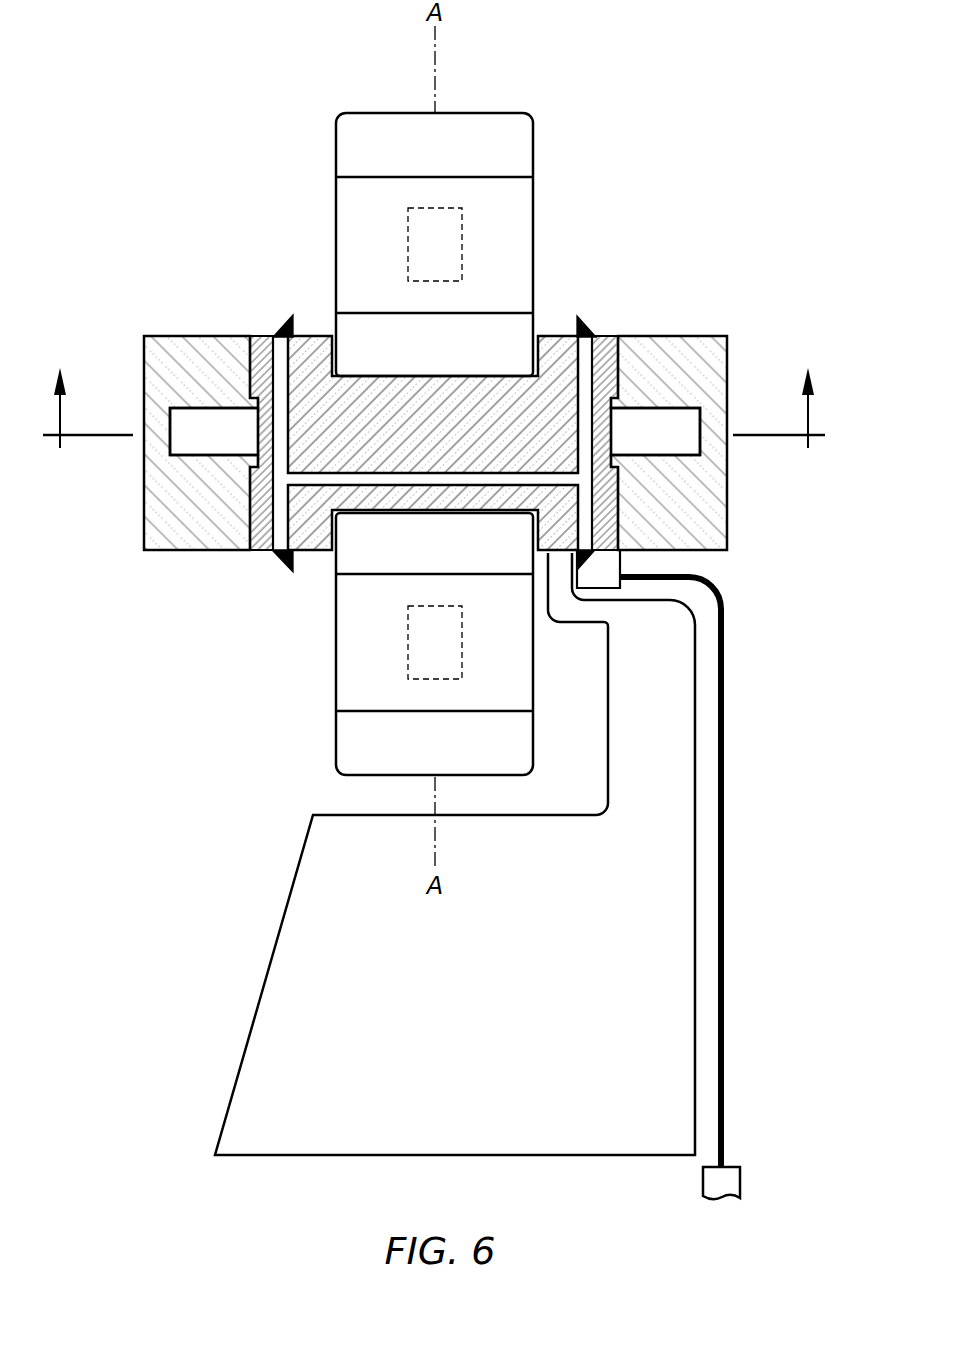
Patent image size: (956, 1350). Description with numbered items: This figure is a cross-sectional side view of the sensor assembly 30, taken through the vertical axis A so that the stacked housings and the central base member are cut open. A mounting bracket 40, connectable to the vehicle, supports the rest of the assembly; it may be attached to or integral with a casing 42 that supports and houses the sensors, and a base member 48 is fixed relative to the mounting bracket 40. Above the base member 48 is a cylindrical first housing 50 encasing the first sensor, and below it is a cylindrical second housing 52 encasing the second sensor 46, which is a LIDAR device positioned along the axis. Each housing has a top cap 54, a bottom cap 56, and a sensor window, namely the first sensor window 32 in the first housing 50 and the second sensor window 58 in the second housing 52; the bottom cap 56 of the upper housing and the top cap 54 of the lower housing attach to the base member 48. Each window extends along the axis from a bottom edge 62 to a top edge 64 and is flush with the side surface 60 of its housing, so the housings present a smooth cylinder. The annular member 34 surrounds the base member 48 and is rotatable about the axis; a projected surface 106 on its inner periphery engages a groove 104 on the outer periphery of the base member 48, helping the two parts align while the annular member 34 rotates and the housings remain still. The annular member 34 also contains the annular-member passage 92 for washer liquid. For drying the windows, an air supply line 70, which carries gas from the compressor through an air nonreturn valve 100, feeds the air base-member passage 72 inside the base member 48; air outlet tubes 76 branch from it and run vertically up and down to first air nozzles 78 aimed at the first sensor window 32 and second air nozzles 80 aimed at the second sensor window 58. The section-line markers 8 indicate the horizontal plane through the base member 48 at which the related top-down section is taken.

The section line 8- 8 is at (434, 410).
The sensor assembly 30 is at (158, 120).
The first sensor window 32 is at (336, 212).
The annular member 34 is at (144, 352).
The mounting bracket 40 is at (275, 943).
The casing 42 is at (463, 227).
The second sensor 46 is at (463, 625).
The base member 48 is at (553, 334).
The first housing 50 is at (363, 111).
The second housing 52 is at (360, 777).
The top cap 54 is at (336, 158).
The bottom cap 56 is at (336, 330).
The second sensor window 58 is at (336, 676).
The side surface 60 is at (535, 155).
The bottom edge 62 is at (416, 314).
The top edge 64 is at (416, 176).
The air supply line 70 is at (724, 822).
The air base-member passage 72 is at (596, 366).
The air outlet tubes 76 is at (272, 440).
The first air nozzles 78 is at (283, 330).
The second air nozzles 80 is at (284, 564).
The annular-member passage 92 is at (246, 441).
The air nonreturn valve 100 is at (742, 1177).
The groove 104 is at (254, 460).
The projected surface 106 is at (273, 397).